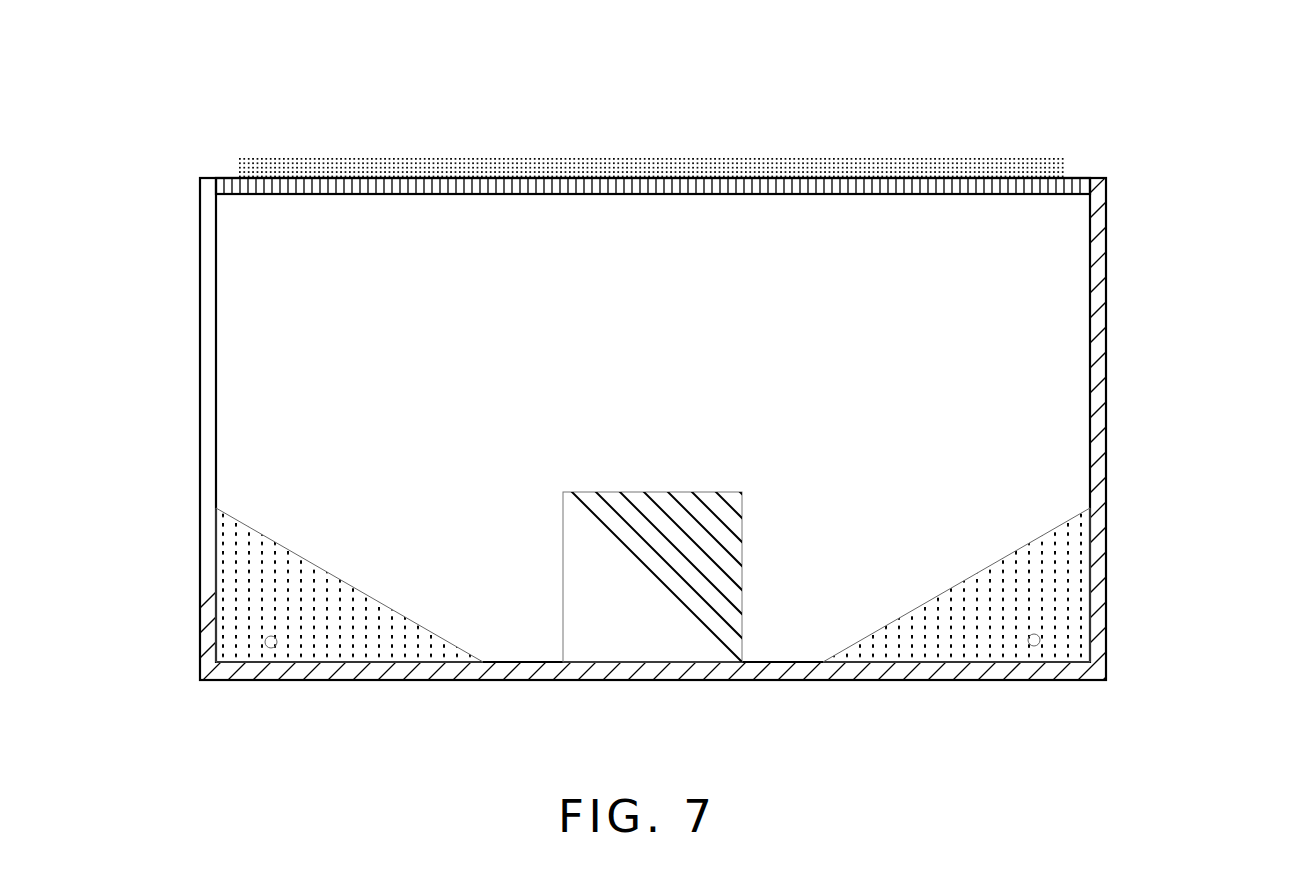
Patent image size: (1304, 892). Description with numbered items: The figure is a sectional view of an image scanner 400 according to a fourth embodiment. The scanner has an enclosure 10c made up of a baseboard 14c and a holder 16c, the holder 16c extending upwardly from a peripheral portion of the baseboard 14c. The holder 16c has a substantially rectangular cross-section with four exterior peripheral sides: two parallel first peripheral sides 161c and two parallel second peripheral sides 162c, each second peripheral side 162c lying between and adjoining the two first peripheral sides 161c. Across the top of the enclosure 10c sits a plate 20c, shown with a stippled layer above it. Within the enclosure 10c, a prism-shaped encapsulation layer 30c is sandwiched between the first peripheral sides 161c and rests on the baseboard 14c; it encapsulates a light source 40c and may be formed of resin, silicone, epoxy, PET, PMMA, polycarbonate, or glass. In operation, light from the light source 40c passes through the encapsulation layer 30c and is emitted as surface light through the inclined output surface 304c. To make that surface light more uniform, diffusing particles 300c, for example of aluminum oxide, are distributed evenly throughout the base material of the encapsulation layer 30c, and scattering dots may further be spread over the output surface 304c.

The image scanner 400 is at (203, 86).
The enclosure 10c is at (165, 305).
The cover plate 20c is at (1077, 185).
The holder 16c is at (1233, 230).
The first peripheral side 161c is at (1097, 228).
The second peripheral side 162c is at (1037, 333).
The baseboard 14c is at (985, 668).
The encapsulation layer 30c is at (1042, 588).
The diffusing particle 300c is at (912, 642).
The output surface 304c is at (893, 613).
The light source 40c is at (1034, 647).